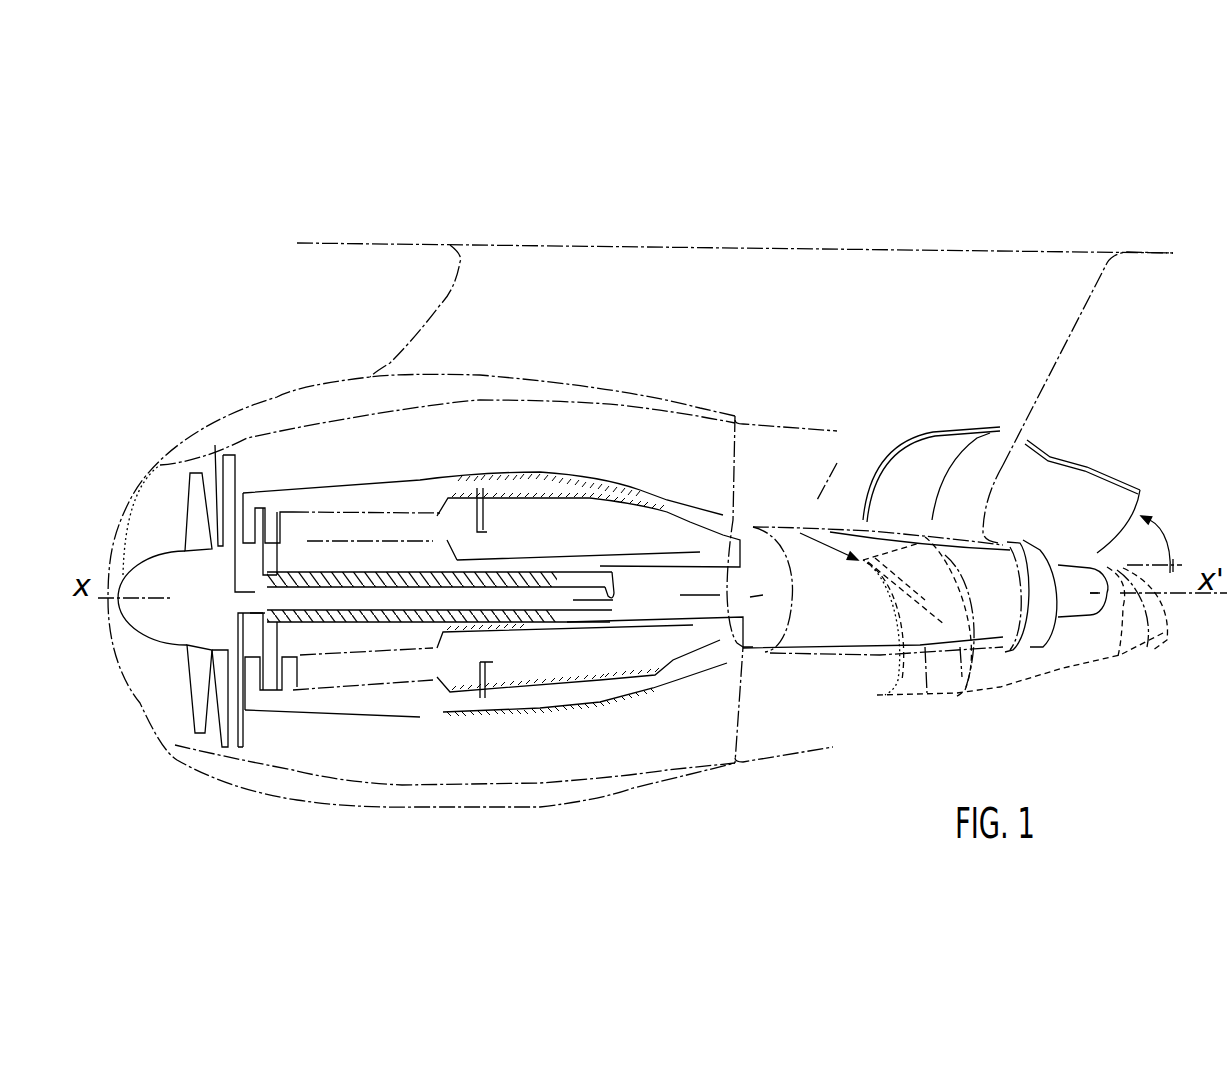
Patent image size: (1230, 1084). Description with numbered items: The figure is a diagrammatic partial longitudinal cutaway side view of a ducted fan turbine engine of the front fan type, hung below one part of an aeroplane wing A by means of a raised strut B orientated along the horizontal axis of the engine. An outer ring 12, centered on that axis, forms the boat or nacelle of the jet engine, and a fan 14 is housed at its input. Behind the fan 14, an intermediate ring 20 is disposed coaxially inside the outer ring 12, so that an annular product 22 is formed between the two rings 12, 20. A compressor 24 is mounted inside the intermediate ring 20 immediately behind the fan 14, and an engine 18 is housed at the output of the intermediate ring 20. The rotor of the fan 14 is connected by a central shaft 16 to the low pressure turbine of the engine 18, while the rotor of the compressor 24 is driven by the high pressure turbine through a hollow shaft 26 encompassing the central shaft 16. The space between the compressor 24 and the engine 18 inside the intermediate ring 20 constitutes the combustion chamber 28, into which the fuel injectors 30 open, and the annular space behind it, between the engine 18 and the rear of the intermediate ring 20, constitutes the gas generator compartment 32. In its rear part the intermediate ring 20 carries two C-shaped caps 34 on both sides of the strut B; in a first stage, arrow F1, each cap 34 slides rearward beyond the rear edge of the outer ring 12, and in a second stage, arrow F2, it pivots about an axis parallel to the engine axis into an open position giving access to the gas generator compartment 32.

The outer ring 12 is at (253, 793).
The fan 14 is at (183, 707).
The central shaft 16 is at (500, 592).
The engine 18 is at (803, 663).
The intermediate ring 20 is at (443, 700).
The product 22 is at (468, 435).
The compressor 24 is at (302, 673).
The hollow shaft 26 is at (543, 577).
The combustion chamber 28 is at (600, 662).
The fuel injectors 30 is at (493, 664).
The gas generator compartment 32 is at (690, 548).
The caps 34 is at (1075, 457).
The wing A is at (360, 233).
The raised strut B is at (460, 300).
The arrow F1 is at (820, 540).
The arrow F2 is at (1170, 540).